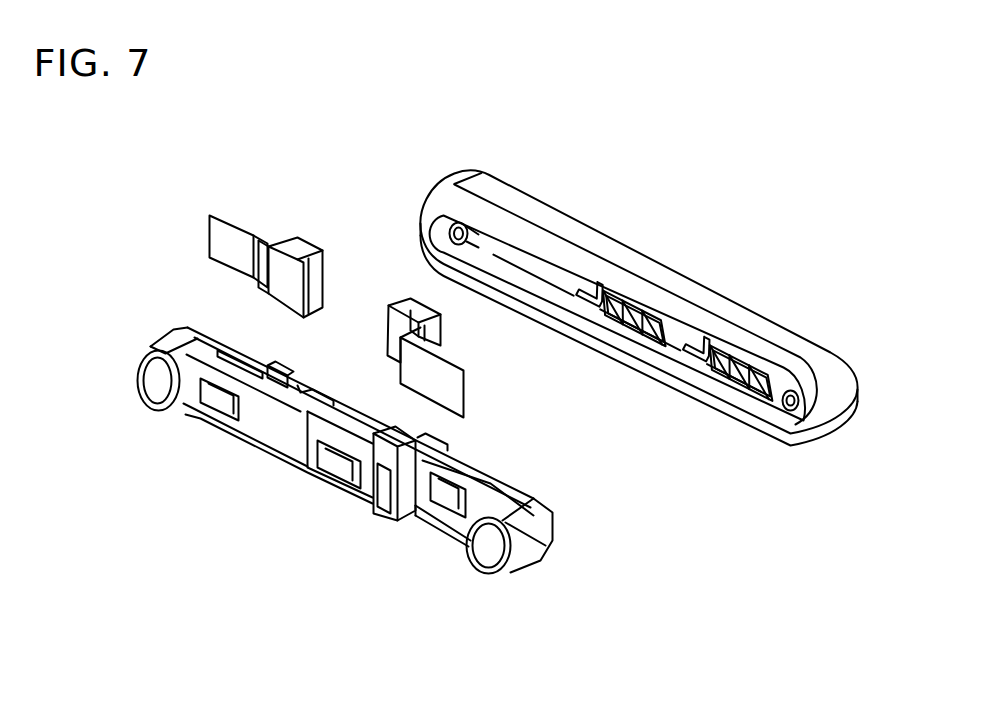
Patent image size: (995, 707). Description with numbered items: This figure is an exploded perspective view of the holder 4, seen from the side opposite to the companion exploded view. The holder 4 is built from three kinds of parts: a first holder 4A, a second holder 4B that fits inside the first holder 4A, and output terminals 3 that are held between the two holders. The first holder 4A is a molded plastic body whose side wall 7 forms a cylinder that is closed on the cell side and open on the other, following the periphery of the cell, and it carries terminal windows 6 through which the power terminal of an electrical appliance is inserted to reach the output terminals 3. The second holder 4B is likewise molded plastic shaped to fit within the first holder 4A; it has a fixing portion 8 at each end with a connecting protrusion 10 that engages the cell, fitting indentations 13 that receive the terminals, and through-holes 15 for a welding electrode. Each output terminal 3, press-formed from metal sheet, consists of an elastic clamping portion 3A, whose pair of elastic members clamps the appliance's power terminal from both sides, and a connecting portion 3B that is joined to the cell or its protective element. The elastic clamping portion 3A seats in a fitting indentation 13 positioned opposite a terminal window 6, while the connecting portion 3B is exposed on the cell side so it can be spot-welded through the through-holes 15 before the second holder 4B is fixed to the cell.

The output terminal 3 is at (337, 284).
The elastic clamping portion 3A is at (437, 342).
The connecting portion 3B is at (213, 243).
The holder 4 is at (462, 399).
The first holder 4A is at (638, 374).
The second holder 4B is at (398, 474).
The terminal window 6 is at (573, 312).
The side wall 7 is at (630, 287).
The fixing portion 8 is at (157, 387).
The connecting protrusion 10 is at (137, 381).
The fitting indentation 13 is at (312, 385).
The through-hole 15 is at (234, 398).